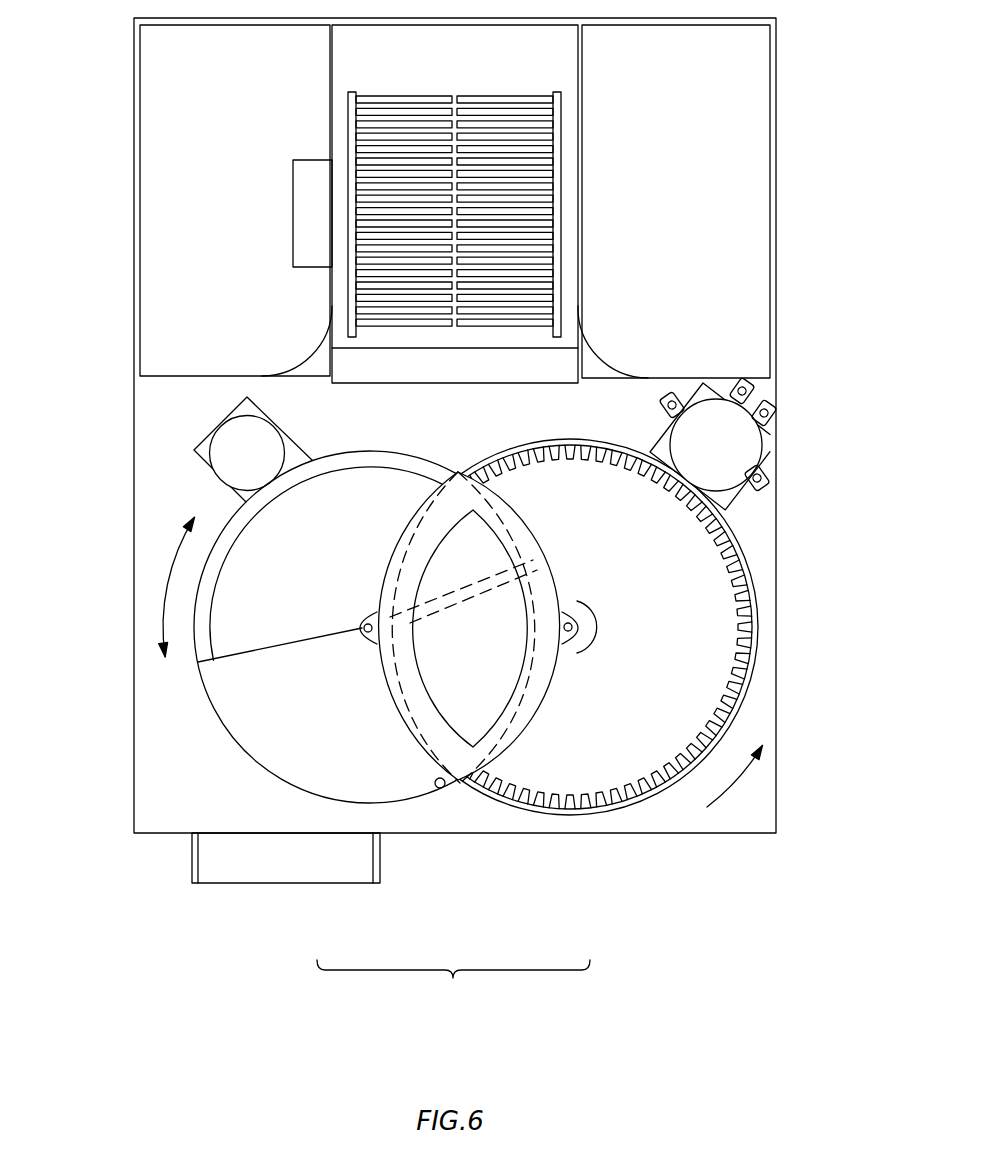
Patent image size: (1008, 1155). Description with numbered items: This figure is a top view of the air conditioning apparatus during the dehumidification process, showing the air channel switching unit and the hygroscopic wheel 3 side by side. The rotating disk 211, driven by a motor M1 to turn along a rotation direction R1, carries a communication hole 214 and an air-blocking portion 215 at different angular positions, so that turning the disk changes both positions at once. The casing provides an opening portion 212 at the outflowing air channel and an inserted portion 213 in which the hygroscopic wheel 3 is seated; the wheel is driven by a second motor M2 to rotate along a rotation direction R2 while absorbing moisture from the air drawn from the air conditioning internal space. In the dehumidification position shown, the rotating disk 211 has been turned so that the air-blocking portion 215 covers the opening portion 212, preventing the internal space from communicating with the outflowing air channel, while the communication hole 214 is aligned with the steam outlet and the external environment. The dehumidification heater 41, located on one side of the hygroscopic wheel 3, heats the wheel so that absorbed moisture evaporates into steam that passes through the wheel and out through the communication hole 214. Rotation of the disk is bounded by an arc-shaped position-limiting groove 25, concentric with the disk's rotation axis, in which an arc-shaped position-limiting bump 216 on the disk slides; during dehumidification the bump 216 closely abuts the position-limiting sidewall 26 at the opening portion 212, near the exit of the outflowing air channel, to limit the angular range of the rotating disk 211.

The hygroscopic wheel 3 is at (710, 608).
The arc-shaped position-limiting groove 25 is at (236, 528).
The position-limiting sidewall 26 is at (447, 789).
The dehumidification heater 41 is at (505, 758).
The rotating disk 211 is at (453, 985).
The opening portion 212 is at (202, 688).
The inserted portion 213 is at (647, 793).
The communication hole 214 is at (528, 700).
The air-blocking portion 215 is at (357, 778).
The position-limiting bump 216 is at (440, 795).
The motor M1 is at (237, 453).
The motor M2 is at (718, 447).
The rotation direction R1 is at (172, 585).
The rotation direction R2 is at (739, 824).